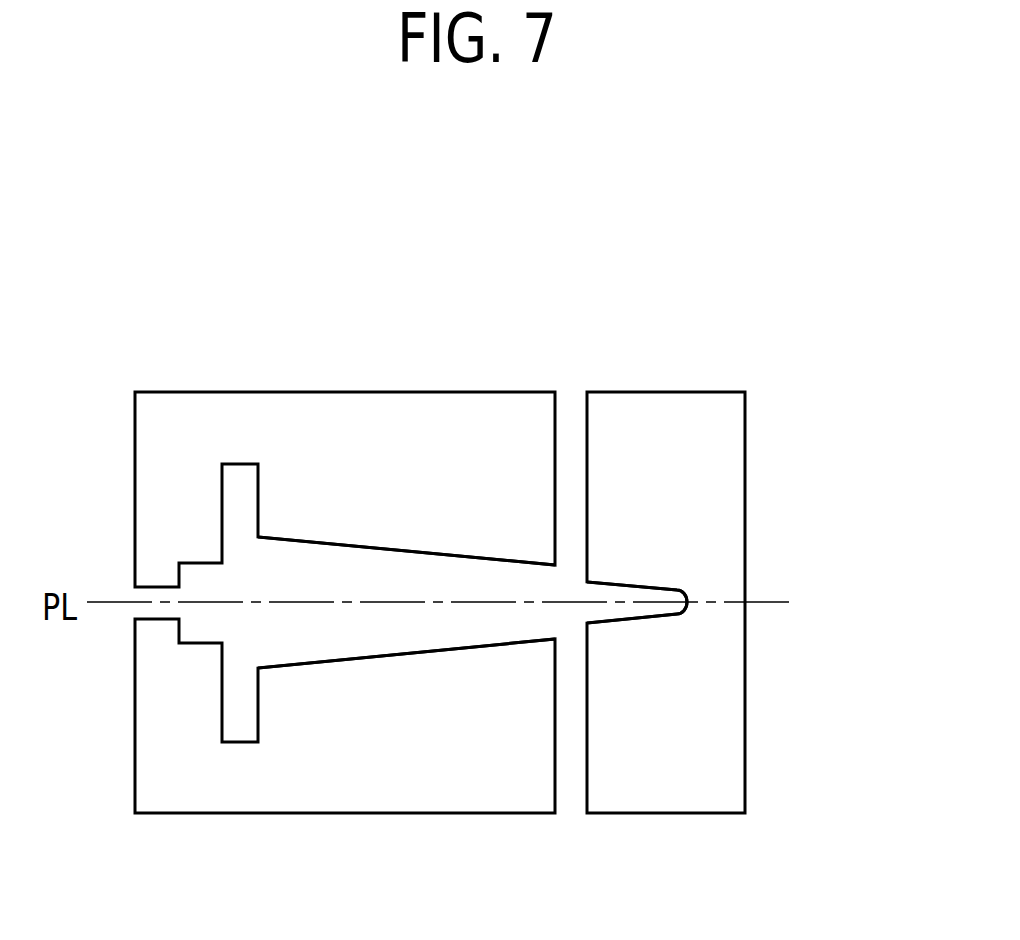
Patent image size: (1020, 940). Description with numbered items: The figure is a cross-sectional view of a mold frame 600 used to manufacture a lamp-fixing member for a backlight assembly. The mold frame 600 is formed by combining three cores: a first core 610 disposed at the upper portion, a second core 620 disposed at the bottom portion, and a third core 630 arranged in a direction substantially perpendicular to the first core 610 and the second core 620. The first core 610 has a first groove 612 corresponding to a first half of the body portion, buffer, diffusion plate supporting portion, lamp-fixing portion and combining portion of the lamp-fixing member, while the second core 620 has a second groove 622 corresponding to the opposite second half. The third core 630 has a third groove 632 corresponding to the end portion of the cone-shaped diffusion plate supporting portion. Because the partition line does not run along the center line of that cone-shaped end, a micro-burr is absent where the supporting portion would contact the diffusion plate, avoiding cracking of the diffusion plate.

The mold frame 600 is at (485, 194).
The first core 610 is at (331, 432).
The first groove 612 is at (455, 555).
The second core 620 is at (332, 773).
The second groove 622 is at (458, 648).
The third core 630 is at (702, 477).
The third groove 632 is at (677, 590).